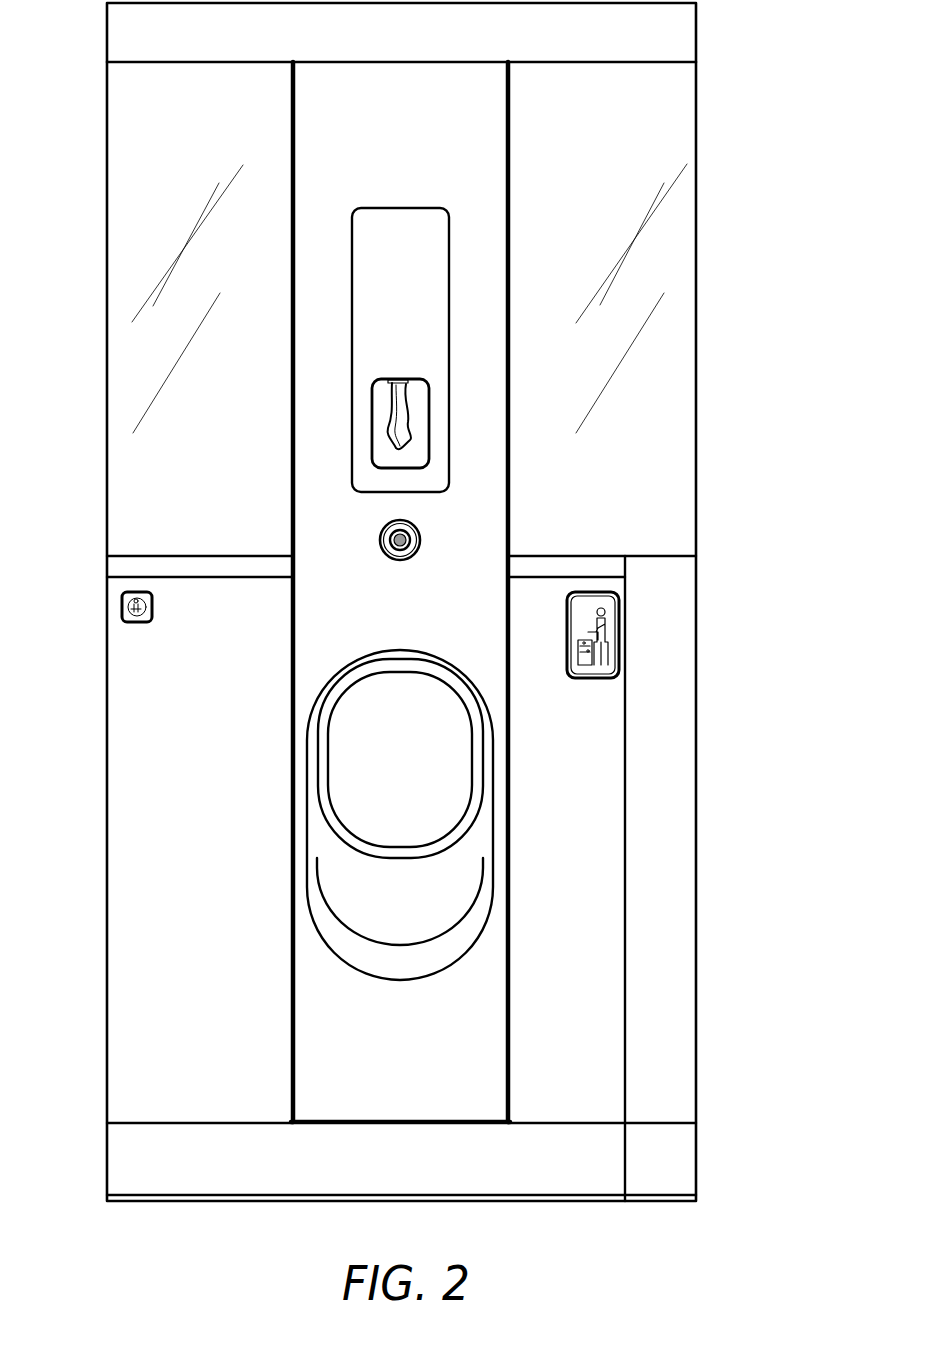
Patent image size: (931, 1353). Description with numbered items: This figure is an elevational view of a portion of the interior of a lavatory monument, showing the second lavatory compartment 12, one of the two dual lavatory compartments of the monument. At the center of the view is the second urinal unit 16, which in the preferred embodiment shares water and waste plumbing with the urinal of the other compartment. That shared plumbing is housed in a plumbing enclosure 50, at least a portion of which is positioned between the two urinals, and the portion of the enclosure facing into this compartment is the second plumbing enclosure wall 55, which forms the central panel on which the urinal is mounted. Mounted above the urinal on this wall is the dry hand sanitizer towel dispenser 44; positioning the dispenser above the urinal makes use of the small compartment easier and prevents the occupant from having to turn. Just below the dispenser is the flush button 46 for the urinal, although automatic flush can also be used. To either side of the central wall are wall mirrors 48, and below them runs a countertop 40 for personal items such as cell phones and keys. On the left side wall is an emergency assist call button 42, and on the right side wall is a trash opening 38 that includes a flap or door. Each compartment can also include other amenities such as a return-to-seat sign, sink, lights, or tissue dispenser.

The second lavatory compartment 12 is at (675, 303).
The second urinal unit 16 is at (447, 777).
The trash opening 38 is at (593, 632).
The countertop 40 is at (153, 556).
The emergency assist call button 42 is at (122, 608).
The dry hand sanitizer towel dispenser 44 is at (420, 332).
The flush button 46 is at (380, 540).
The wall mirror 48 is at (214, 292).
The plumbing enclosure 50 is at (337, 1085).
The second plumbing enclosure wall 55 is at (418, 118).